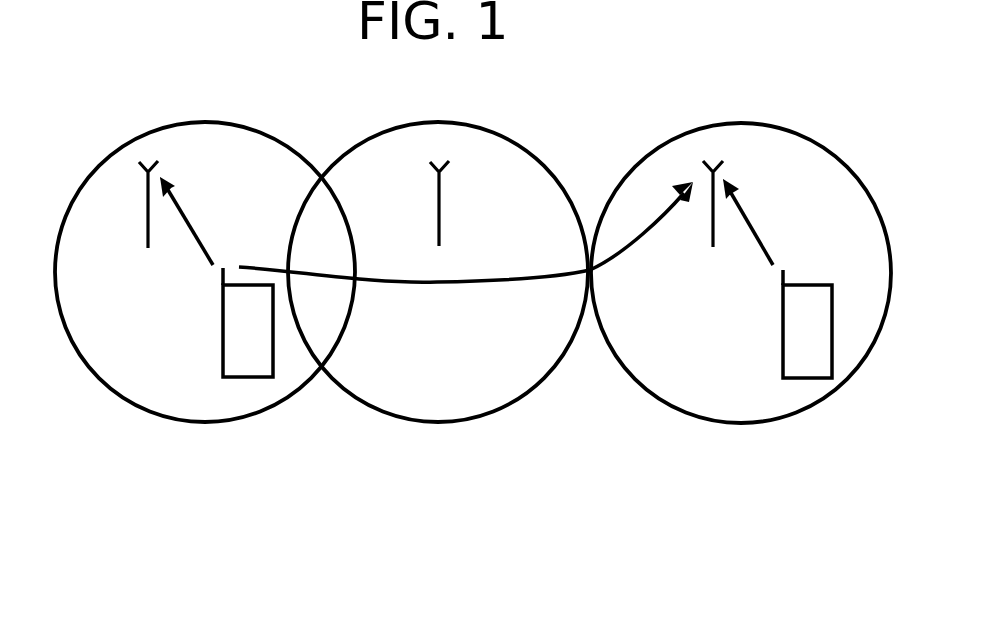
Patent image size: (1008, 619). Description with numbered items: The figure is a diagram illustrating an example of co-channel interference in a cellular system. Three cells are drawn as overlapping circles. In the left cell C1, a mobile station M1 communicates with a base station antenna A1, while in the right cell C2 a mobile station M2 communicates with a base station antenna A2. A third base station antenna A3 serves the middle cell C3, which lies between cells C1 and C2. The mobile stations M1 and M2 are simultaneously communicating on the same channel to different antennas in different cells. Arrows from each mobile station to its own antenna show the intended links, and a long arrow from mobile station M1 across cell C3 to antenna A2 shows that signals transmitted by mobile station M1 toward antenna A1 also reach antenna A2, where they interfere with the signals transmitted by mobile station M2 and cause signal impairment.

The base station antenna A1 is at (148, 158).
The base station antenna A2 is at (707, 160).
The base station antenna A3 is at (436, 158).
The cell C1 is at (190, 423).
The cell C2 is at (725, 423).
The cell C3 is at (493, 413).
The mobile station M1 is at (257, 342).
The mobile station M2 is at (813, 340).